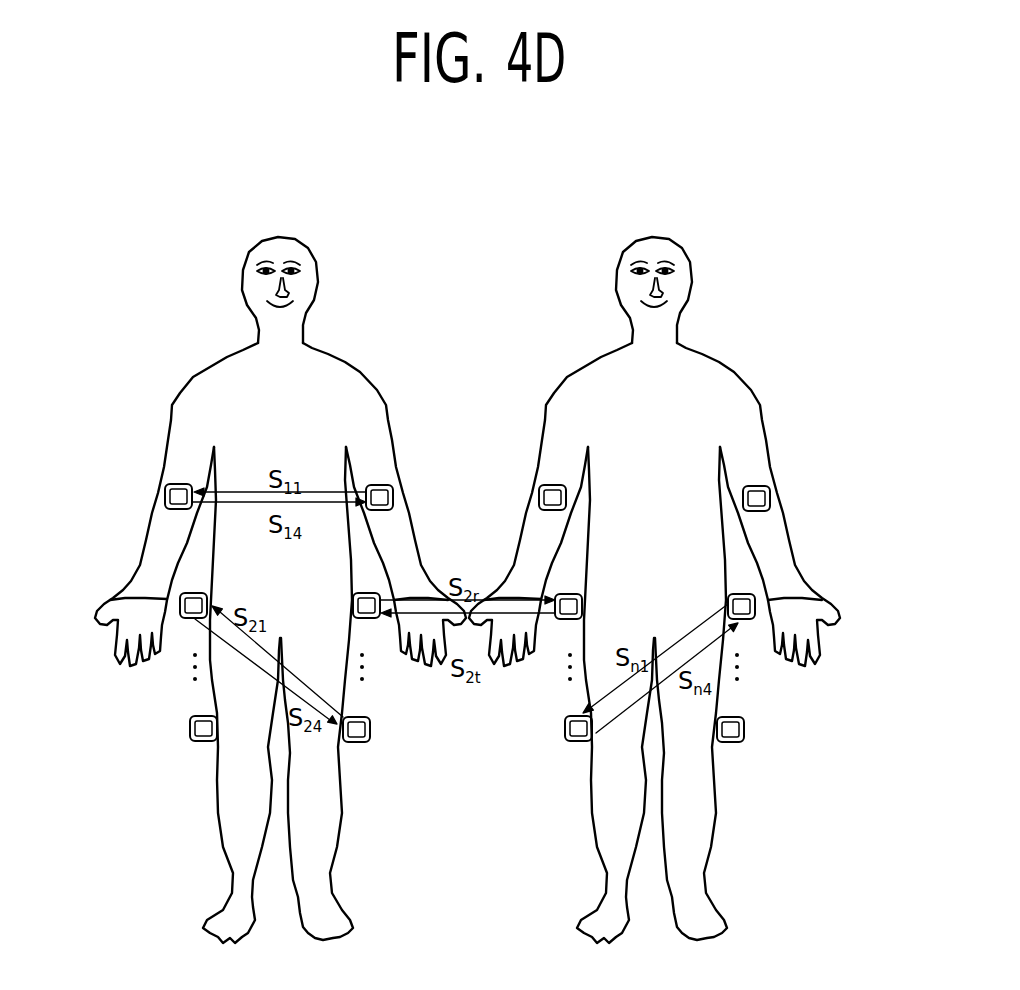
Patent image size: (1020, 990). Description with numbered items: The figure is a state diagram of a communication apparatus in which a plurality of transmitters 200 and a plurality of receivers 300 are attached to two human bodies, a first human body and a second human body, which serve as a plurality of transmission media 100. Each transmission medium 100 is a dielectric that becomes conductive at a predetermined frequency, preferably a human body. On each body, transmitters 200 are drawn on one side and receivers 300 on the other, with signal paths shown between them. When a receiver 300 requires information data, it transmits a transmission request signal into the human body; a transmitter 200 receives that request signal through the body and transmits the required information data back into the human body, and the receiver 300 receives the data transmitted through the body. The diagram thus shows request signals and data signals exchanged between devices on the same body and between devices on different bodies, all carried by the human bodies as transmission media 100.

The transmission medium 100 is at (343, 367).
The transmitter 200 is at (164, 496).
The receiver 300 is at (393, 485).